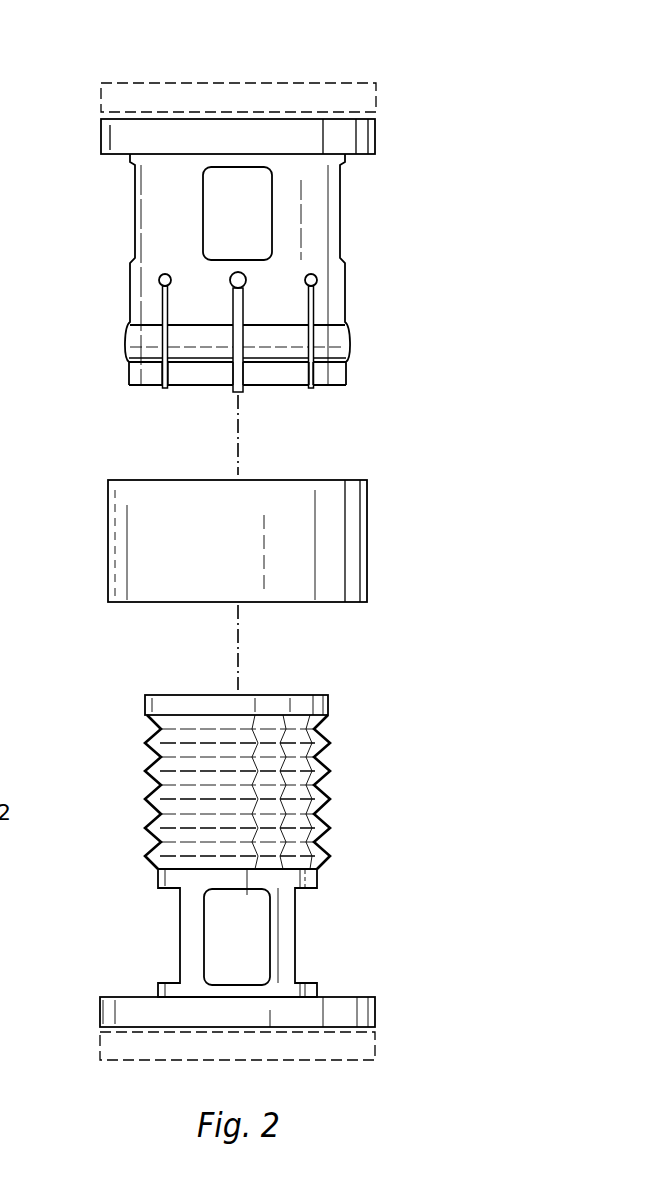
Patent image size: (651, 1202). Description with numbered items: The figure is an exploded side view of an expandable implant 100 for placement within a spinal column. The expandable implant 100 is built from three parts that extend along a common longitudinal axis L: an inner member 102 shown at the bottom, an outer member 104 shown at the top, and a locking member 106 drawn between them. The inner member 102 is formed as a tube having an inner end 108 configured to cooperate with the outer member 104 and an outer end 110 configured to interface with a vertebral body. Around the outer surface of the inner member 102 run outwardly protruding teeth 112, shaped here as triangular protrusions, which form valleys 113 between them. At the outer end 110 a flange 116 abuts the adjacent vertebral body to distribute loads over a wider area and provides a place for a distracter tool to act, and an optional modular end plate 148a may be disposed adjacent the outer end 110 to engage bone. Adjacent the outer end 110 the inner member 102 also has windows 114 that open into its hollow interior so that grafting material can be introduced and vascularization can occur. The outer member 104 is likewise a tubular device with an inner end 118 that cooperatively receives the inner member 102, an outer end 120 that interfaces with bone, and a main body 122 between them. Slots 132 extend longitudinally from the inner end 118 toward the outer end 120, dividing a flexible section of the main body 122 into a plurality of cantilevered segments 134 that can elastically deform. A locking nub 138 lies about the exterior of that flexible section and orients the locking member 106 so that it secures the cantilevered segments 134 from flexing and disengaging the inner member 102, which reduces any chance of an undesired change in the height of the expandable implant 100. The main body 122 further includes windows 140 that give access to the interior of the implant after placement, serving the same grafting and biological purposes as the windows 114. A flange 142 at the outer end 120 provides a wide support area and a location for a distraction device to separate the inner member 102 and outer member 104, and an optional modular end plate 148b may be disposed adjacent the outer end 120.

The expandable implant 100 is at (302, 60).
The inner member 102 is at (233, 837).
The outer member 104 is at (223, 299).
The locking member 106 is at (107, 540).
The inner end 108 is at (330, 703).
The outer end 110 is at (204, 1011).
The outwardly protruding teeth 112 is at (330, 799).
The valleys 113 is at (160, 814).
The windows 114 is at (270, 921).
The flange 116 is at (100, 1017).
The inner end 118 is at (148, 392).
The outer end 120 is at (202, 140).
The main body 122 is at (345, 213).
The slots 132 is at (237, 298).
The cantilevered segments 134 is at (203, 388).
The locking nub 138 is at (353, 340).
The windows 140 is at (201, 214).
The flange 142 is at (100, 133).
The modular end plate 148a is at (140, 1062).
The modular end plate 148b is at (147, 82).
The longitudinal axis L is at (240, 463).